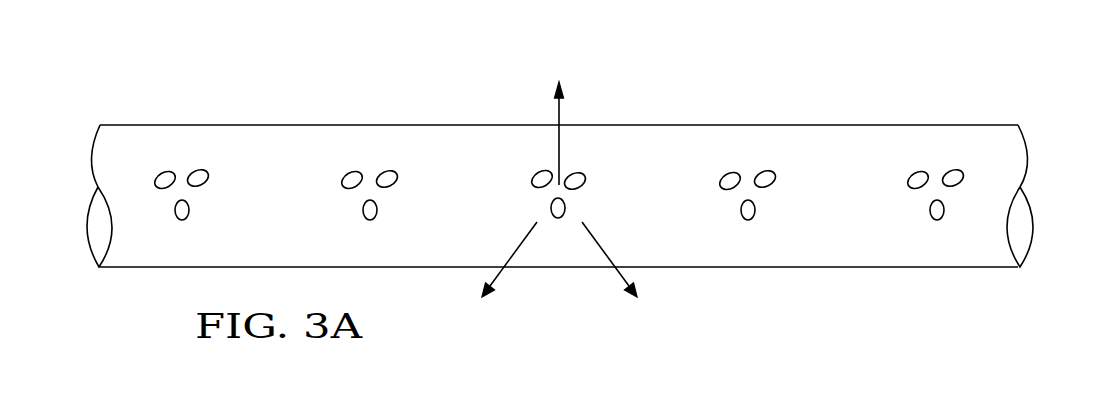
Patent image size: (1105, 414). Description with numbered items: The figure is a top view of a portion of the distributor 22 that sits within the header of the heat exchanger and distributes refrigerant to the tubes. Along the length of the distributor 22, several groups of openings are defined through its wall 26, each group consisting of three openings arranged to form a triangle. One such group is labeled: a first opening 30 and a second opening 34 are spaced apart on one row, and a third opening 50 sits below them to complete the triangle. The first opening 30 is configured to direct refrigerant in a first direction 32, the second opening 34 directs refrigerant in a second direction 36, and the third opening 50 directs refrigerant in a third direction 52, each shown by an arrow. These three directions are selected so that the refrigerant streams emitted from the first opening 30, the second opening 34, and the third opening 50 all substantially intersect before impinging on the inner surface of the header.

The distributor 22 is at (935, 75).
The wall 26 is at (982, 140).
The first opening 30 is at (540, 175).
The first direction 32 is at (615, 275).
The second opening 34 is at (580, 178).
The second direction 36 is at (500, 273).
The third opening 50 is at (558, 212).
The third direction 52 is at (562, 110).